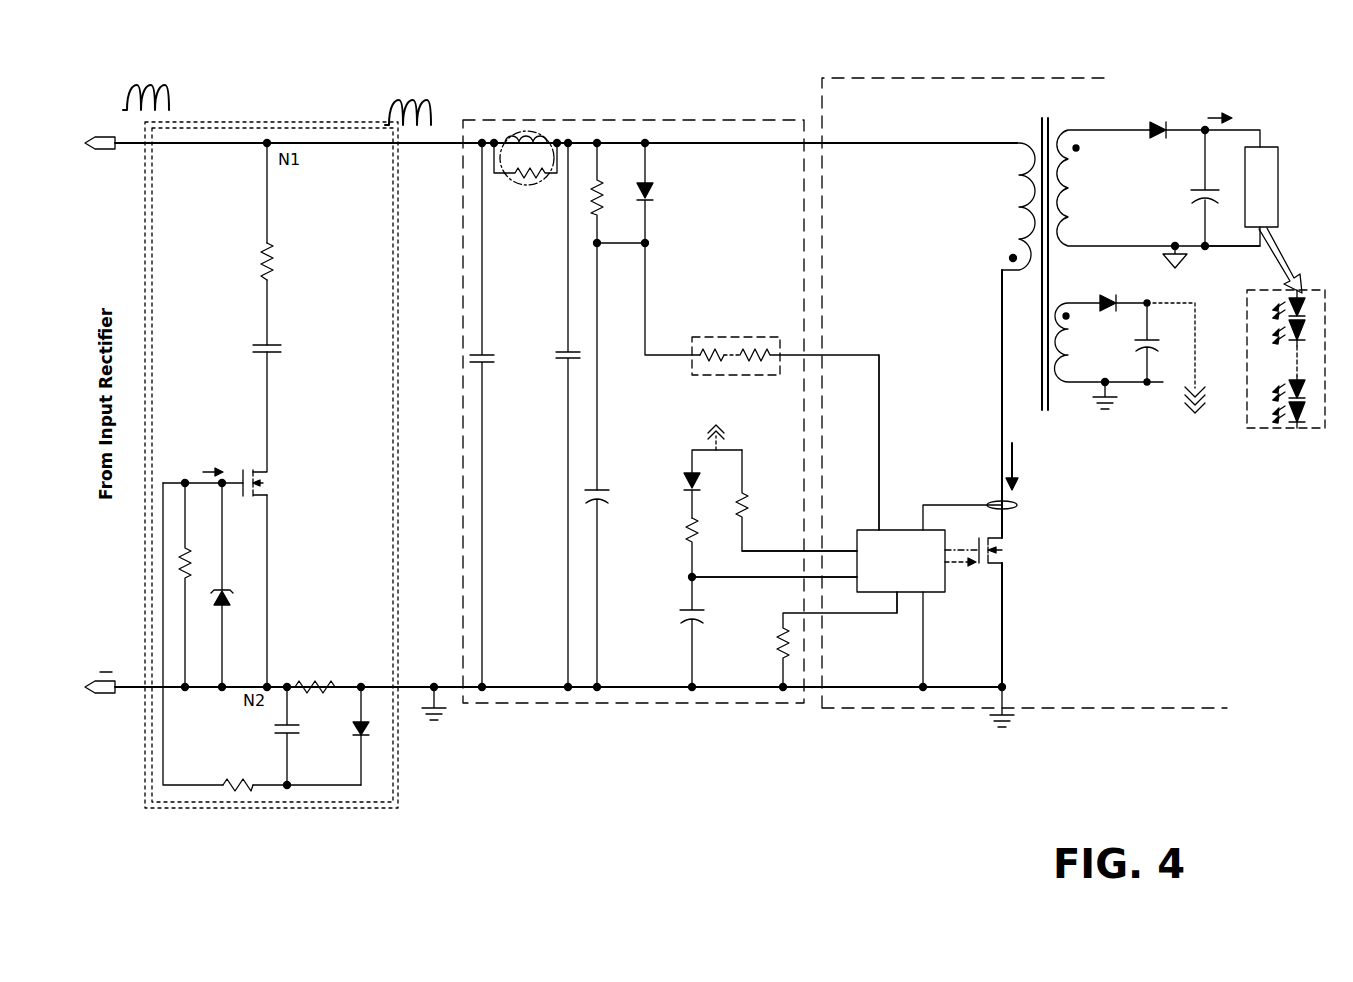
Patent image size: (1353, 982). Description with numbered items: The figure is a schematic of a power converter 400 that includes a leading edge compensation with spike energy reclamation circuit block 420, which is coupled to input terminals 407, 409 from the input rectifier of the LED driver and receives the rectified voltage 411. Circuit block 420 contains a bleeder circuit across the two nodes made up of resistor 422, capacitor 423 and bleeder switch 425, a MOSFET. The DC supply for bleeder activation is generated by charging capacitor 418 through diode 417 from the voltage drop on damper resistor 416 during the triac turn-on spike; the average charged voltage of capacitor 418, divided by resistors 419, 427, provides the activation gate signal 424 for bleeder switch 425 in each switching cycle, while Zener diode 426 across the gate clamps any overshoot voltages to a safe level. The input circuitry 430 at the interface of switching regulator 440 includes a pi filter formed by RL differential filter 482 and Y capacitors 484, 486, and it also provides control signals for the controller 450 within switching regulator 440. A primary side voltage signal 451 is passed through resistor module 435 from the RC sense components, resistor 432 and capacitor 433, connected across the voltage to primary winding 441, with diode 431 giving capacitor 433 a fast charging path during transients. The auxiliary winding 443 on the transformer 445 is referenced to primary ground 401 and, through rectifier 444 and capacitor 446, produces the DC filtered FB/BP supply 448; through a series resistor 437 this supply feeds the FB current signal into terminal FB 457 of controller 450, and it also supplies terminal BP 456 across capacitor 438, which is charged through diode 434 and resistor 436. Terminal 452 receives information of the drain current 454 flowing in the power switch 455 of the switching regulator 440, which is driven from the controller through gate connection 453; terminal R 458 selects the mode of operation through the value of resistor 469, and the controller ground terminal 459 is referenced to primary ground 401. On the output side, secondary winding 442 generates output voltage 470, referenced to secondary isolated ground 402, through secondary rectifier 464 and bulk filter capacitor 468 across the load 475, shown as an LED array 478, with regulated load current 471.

The power converter 400 is at (566, 473).
The primary ground 401 is at (446, 735).
The secondary isolated ground 402 is at (1180, 268).
The input terminal 407 is at (122, 168).
The input terminal 409 is at (112, 664).
The rectified voltage VRECT 411 is at (148, 86).
The damper resistor 416 is at (314, 680).
The diode 417 is at (370, 694).
The capacitor 418 is at (298, 742).
The divider resistor 419 is at (238, 776).
The leading edge compensation circuit 420 is at (284, 92).
The resistor 422 is at (258, 260).
The capacitor 423 is at (270, 351).
The activation gate signal 424 is at (208, 462).
The bleeder switch 425 is at (288, 490).
The Zener diode 426 is at (238, 610).
The divider resistor 427 is at (201, 558).
The input circuitry 430 is at (617, 120).
The diode 431 is at (658, 198).
The resistor 432 is at (608, 206).
The capacitor 433 is at (616, 504).
The diode 434 is at (684, 483).
The resistor module 435 is at (736, 338).
The resistor 436 is at (702, 538).
The series resistor 437 is at (750, 514).
The capacitor 438 is at (668, 614).
The switching regulator 440 is at (1050, 70).
The primary winding 441 is at (1004, 200).
The secondary winding 442 is at (1071, 206).
The auxiliary winding 443 is at (1073, 354).
The rectifier 444 is at (1106, 290).
The transformer T1 445 is at (1042, 114).
The capacitor 446 is at (1180, 336).
The FB/BP supply 448 is at (728, 424).
The controller 450 is at (894, 529).
The primary side voltage signal 451 is at (878, 466).
The terminal 452 is at (944, 508).
The gate drive line 453 is at (965, 578).
The drain current 454 is at (1028, 458).
The power switch SW 455 is at (1005, 545).
The terminal BP 456 is at (830, 570).
The terminal FB 457 is at (832, 538).
The terminal R 458 is at (886, 632).
The G terminal 459 is at (932, 610).
The secondary rectifier D1 464 is at (1138, 122).
The bulk filter capacitor C1 468 is at (1190, 204).
The resistor 469 is at (772, 650).
The output voltage Vo 470 is at (1268, 104).
The load current Io 471 is at (1226, 102).
The load 475 is at (1260, 202).
The LED array 478 is at (1270, 434).
The RL differential filter 482 is at (516, 194).
The Y capacitor 484 is at (490, 362).
The Y capacitor 486 is at (564, 354).